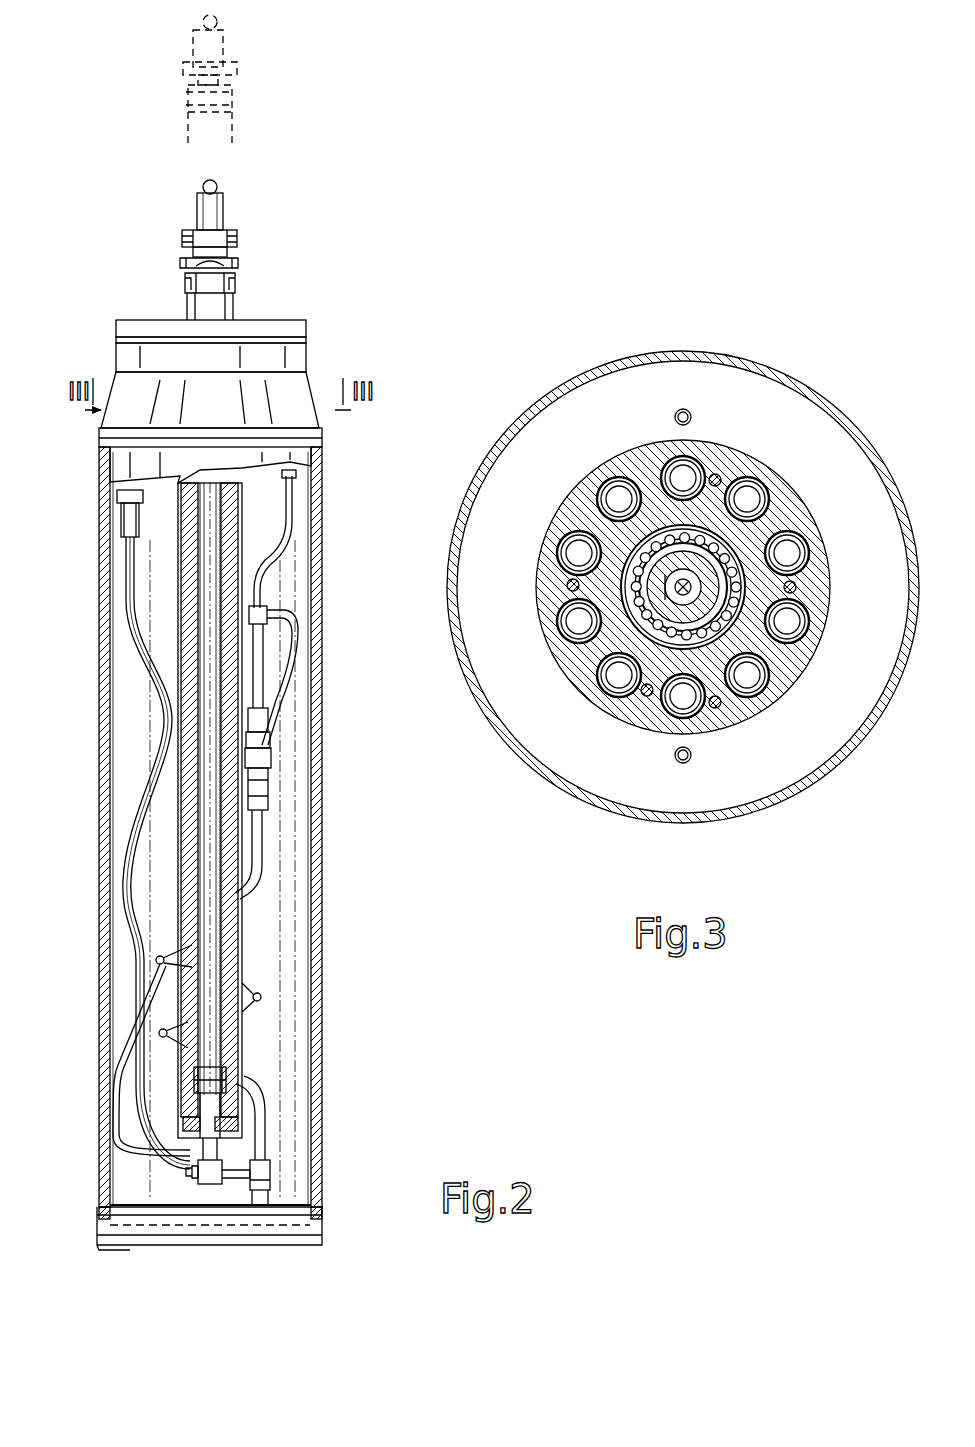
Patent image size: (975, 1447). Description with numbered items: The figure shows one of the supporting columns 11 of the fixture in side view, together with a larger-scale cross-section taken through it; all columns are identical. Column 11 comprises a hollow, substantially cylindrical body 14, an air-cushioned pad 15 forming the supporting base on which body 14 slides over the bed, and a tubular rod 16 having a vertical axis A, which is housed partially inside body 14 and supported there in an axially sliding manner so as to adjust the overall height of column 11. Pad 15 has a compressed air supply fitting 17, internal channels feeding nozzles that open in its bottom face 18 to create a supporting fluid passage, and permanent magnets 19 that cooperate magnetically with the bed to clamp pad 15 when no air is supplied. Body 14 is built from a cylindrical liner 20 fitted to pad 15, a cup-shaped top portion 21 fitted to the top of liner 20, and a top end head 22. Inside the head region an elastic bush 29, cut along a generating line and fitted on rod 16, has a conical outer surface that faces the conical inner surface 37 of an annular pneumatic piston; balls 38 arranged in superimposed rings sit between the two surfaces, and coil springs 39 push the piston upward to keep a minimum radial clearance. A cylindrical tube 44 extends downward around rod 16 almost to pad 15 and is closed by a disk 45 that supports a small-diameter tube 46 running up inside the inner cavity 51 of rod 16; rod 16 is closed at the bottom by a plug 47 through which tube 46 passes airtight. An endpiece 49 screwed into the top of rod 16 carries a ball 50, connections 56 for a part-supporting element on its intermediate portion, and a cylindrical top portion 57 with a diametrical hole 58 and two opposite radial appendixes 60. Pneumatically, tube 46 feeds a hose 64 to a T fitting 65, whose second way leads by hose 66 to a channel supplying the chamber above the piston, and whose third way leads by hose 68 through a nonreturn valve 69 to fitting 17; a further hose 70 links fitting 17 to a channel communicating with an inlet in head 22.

In FIG. 2, the column 11 is at (332, 806).
In FIG. 3, the column 11 is at (737, 352).
In FIG. 2, the hollow cylindrical body 14 is at (325, 895).
In FIG. 2, the air-cushioned pad 15 is at (225, 1238).
In FIG. 2, the tubular rod 16 is at (230, 512).
In FIG. 3, the tubular rod 16 is at (663, 600).
In FIG. 2, the compressed air supply fitting 17 is at (270, 1185).
In FIG. 2, the bottom face 18 is at (128, 1247).
In FIG. 2, the permanent magnets 19 is at (160, 1240).
In FIG. 2, the cylindrical liner 20 is at (318, 1000).
In FIG. 2, the cup-shaped top portion 21 is at (326, 441).
In FIG. 2, the top end head 22 is at (274, 328).
In FIG. 3, the elastic bush 29 is at (732, 566).
In FIG. 3, the inner surface 37 is at (742, 596).
In FIG. 3, the balls 38 is at (613, 517).
In FIG. 3, the coil springs 39 is at (724, 540).
In FIG. 2, the cylindrical tube 44 is at (182, 622).
In FIG. 2, the disk 45 is at (240, 1125).
In FIG. 2, the small-diameter tube 46 is at (205, 938).
In FIG. 3, the small-diameter tube 46 is at (692, 584).
In FIG. 2, the plug 47 is at (228, 1072).
In FIG. 2, the endpiece 49 is at (236, 226).
In FIG. 2, the ball 50 is at (220, 21).
In FIG. 2, the inner cavity 51 is at (212, 578).
In FIG. 3, the inner cavity 51 is at (658, 607).
In FIG. 2, the connections 56 is at (214, 262).
In FIG. 2, the cylindrical top portion 57 is at (198, 208).
In FIG. 2, the diametrical hole 58 is at (232, 220).
In FIG. 2, the radial appendixes 60 is at (238, 70).
In FIG. 2, the hose 64 is at (165, 1005).
In FIG. 2, the T fitting 65 is at (268, 612).
In FIG. 2, the hose 66 is at (296, 492).
In FIG. 2, the hose 68 is at (262, 676).
In FIG. 2, the nonreturn valve 69 is at (268, 752).
In FIG. 2, the hose 70 is at (128, 902).
In FIG. 3, the vertical axis A is at (753, 460).